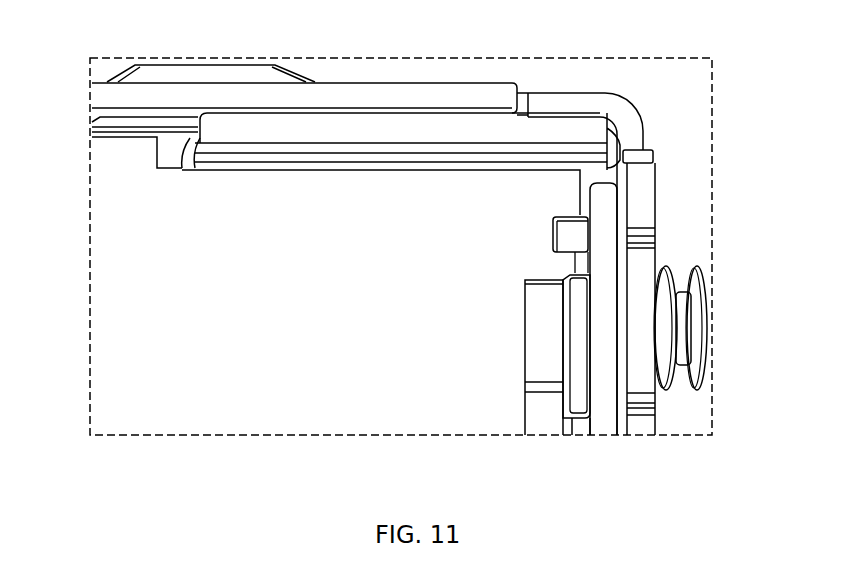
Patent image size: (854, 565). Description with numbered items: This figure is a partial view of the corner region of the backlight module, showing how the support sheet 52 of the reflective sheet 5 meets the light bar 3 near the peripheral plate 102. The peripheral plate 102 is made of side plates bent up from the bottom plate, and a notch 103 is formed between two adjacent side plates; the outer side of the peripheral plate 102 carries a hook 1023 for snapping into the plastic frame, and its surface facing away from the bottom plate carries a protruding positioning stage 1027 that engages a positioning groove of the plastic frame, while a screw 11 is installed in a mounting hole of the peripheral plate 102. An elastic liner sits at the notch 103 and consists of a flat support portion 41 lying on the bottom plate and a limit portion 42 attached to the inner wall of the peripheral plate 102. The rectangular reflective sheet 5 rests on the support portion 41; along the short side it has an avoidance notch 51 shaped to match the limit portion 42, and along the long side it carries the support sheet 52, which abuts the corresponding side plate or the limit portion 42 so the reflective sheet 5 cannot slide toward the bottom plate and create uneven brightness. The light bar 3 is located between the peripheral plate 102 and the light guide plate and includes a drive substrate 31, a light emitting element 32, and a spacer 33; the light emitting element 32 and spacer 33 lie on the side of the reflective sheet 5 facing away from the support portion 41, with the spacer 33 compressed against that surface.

The reflective sheet 5 is at (458, 418).
The hook 1023 is at (215, 72).
The peripheral plate 102 is at (442, 100).
The limit portion 42 is at (338, 130).
The avoidance notch 51 is at (168, 155).
The notch 103 is at (605, 110).
The support sheet 52 is at (640, 157).
The positioning stage 1027 is at (637, 348).
The screw 11 is at (708, 350).
The support portion 41 is at (540, 362).
The light bar 3 is at (681, 309).
The spacer 33 is at (573, 231).
The light emitting element 32 is at (598, 270).
The drive substrate 31 is at (575, 320).